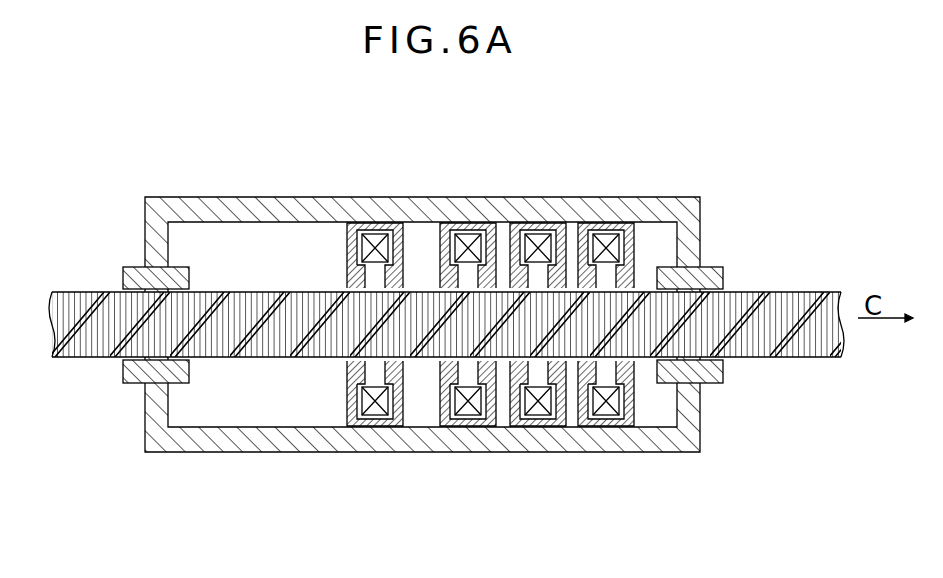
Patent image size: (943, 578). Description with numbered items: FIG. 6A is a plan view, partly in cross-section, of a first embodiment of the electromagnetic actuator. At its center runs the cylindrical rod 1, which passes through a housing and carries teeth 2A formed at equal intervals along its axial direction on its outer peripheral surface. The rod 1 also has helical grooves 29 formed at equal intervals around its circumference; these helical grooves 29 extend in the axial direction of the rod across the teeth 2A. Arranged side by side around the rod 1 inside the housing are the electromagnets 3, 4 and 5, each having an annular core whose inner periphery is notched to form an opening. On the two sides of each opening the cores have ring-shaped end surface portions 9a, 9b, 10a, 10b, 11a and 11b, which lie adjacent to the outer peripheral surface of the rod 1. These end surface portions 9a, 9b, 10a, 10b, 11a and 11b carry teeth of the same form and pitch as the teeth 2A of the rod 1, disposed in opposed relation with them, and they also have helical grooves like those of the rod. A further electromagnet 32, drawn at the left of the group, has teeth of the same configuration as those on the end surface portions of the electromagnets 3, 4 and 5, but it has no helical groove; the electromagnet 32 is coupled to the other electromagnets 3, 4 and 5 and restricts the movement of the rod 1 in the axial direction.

The rod 1 is at (768, 292).
The teeth 2A is at (52, 300).
The helical grooves 29 is at (256, 295).
The electromagnet 32 is at (370, 224).
The electromagnet 3 is at (474, 224).
The electromagnet 4 is at (548, 224).
The electromagnet 5 is at (622, 224).
The end surface portion 9a is at (437, 373).
The end surface portion 9b is at (470, 415).
The end surface portion 10a is at (515, 388).
The end surface portion 10b is at (550, 415).
The end surface portion 11a is at (592, 395).
The end surface portion 11b is at (628, 392).